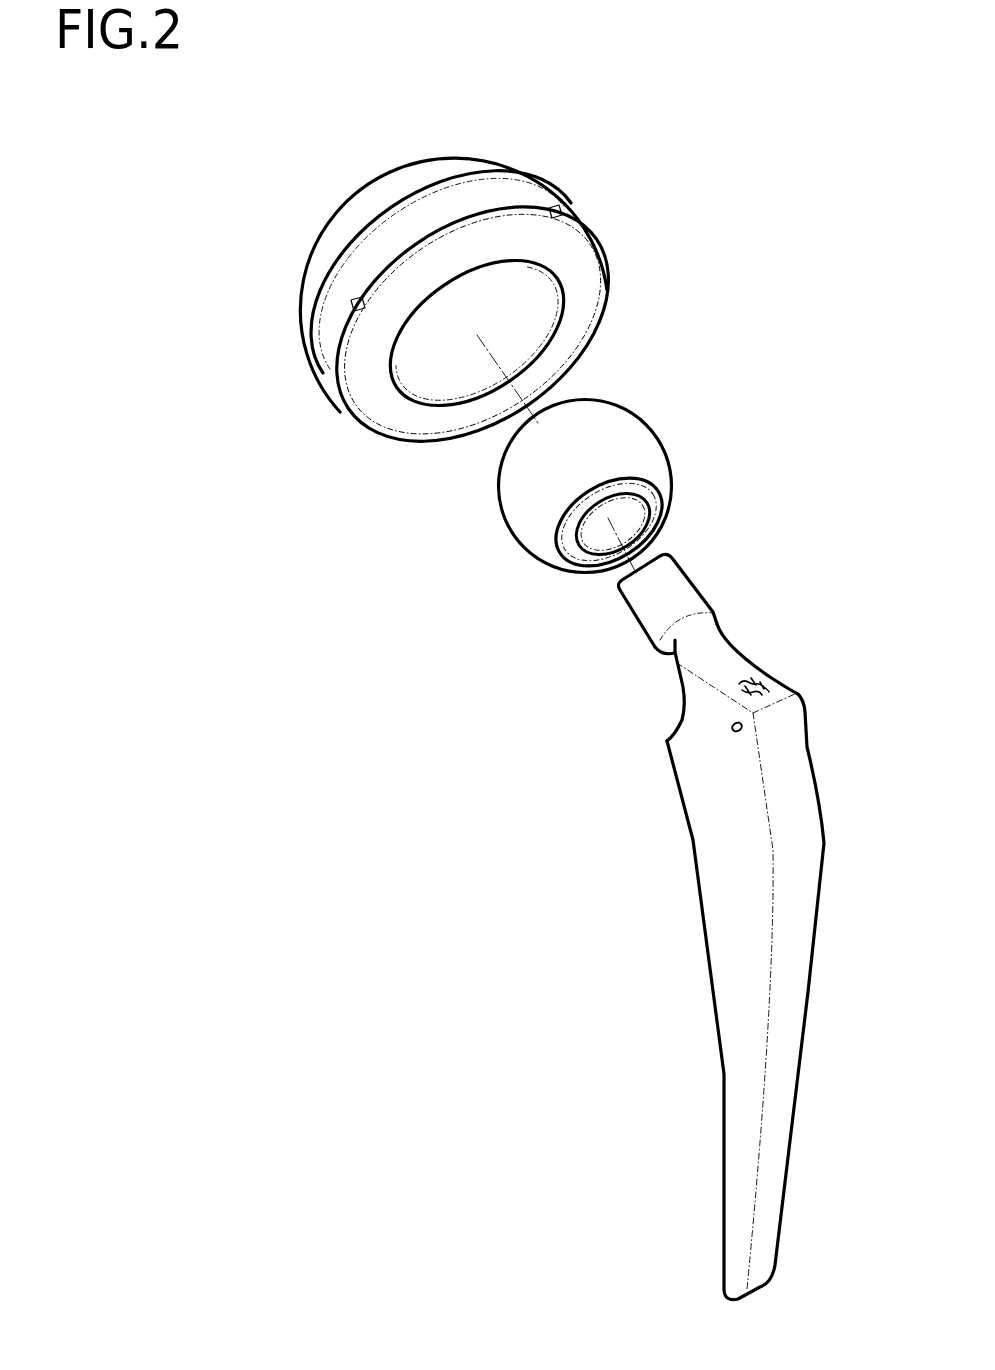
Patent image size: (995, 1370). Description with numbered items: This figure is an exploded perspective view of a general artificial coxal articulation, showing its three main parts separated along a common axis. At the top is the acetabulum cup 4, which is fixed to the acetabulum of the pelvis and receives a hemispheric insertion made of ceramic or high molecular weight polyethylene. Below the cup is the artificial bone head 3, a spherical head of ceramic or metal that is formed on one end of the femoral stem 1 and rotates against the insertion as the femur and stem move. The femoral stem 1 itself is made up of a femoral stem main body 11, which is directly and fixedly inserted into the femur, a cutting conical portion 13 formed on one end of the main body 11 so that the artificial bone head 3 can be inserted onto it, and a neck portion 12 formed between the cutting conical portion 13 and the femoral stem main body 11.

The femoral stem 1 is at (740, 921).
The artificial bone head 3 is at (513, 505).
The acetabulum cup 4 is at (592, 292).
The femoral stem main body 11 is at (808, 994).
The neck portion 12 is at (668, 657).
The cutting conical portion 13 is at (683, 584).